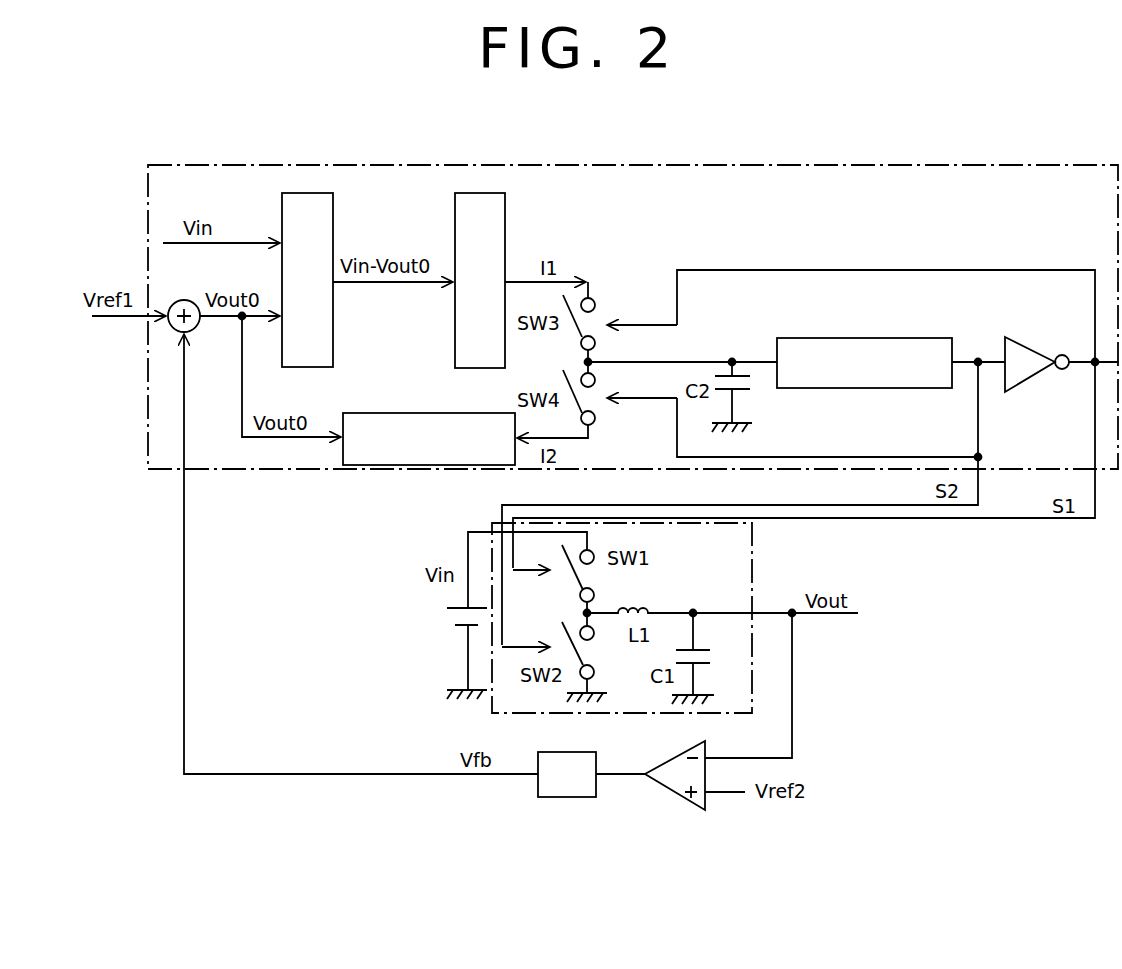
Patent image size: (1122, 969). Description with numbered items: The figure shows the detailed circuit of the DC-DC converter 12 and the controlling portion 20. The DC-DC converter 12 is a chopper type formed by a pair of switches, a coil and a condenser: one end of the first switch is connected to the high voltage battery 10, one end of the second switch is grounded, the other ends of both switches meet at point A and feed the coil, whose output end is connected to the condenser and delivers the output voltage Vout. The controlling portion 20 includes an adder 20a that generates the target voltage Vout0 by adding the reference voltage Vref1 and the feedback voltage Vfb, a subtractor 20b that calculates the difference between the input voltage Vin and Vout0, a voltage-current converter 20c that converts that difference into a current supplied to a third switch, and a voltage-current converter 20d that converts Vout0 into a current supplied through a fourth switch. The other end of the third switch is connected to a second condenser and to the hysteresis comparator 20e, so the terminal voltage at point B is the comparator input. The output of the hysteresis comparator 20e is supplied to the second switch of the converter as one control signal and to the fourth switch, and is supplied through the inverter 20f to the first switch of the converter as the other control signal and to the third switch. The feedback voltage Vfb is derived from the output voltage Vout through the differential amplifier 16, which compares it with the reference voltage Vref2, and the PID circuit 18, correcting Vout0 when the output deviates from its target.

The controlling portion 20 is at (633, 284).
The adder 20a is at (184, 291).
The subtractor 20b is at (345, 269).
The voltage-current converter 20c is at (515, 272).
The voltage-current converter 20d is at (429, 406).
The hysteresis comparator 20e is at (864, 395).
The inverter 20f is at (1040, 346).
The DC-DC converter 12 is at (667, 618).
The 36-volt battery 10 is at (433, 653).
The differential amplifier 16 is at (714, 768).
The PID circuit 18 is at (533, 795).
The point A is at (614, 591).
The point B is at (747, 332).